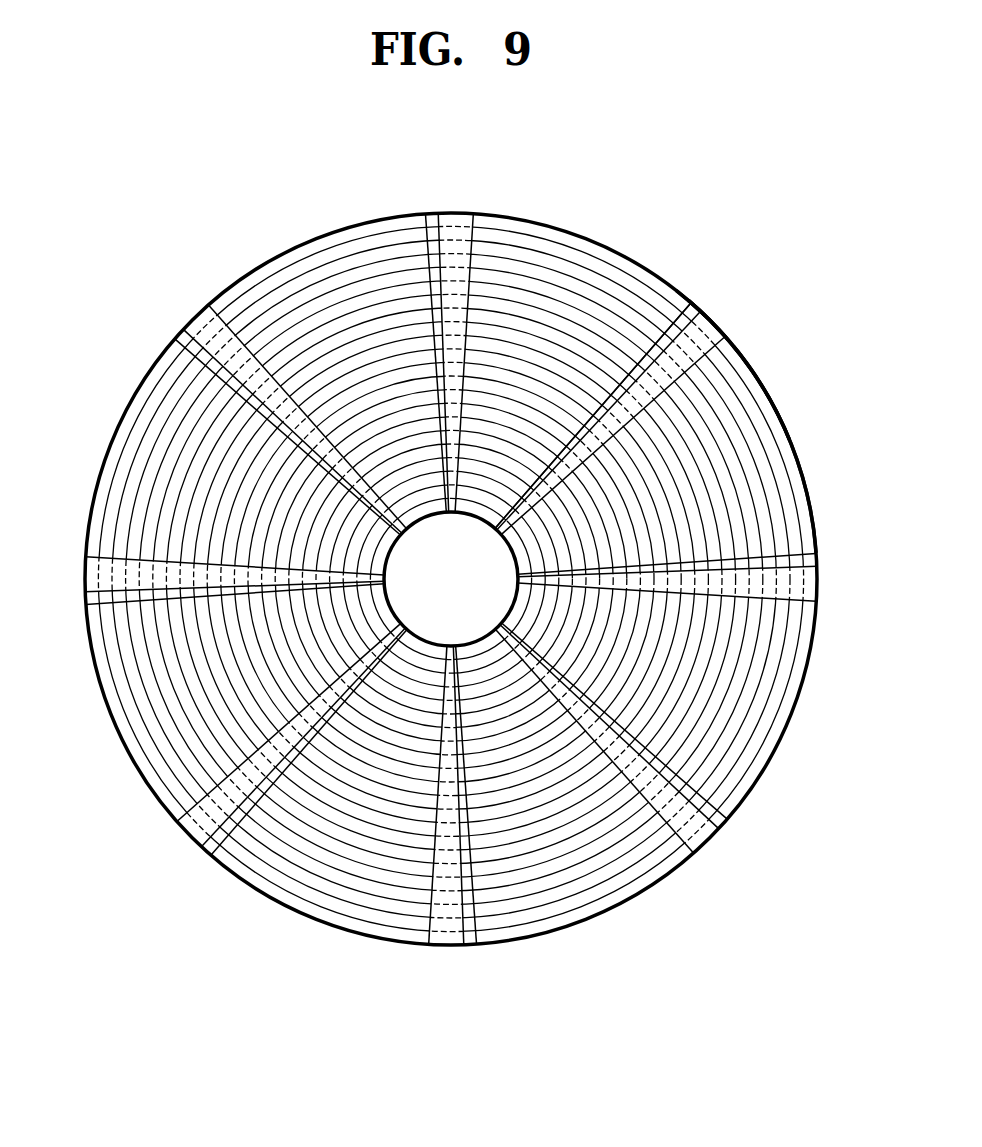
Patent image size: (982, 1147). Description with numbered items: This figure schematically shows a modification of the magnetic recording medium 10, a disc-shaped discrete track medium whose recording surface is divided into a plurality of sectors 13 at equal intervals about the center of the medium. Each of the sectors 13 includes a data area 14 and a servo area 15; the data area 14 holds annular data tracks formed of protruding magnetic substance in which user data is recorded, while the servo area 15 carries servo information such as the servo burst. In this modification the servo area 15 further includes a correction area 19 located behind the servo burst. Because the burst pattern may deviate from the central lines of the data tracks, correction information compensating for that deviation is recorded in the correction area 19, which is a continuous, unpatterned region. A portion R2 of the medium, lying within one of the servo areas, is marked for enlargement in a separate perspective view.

The magnetic recording medium 10 is at (140, 272).
The portion R2 is at (618, 370).
The correction area 19 is at (692, 303).
The servo area 15 is at (692, 297).
The sectors 13 is at (758, 278).
The data area 14 is at (822, 552).